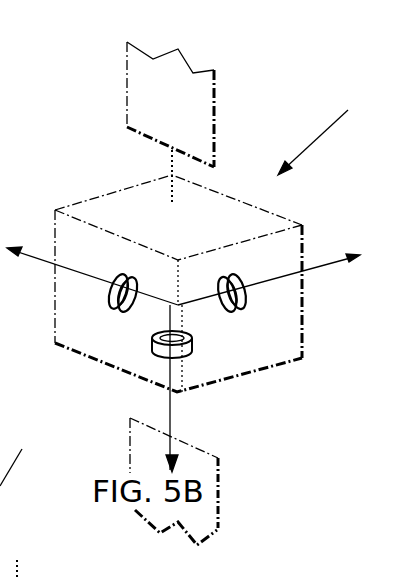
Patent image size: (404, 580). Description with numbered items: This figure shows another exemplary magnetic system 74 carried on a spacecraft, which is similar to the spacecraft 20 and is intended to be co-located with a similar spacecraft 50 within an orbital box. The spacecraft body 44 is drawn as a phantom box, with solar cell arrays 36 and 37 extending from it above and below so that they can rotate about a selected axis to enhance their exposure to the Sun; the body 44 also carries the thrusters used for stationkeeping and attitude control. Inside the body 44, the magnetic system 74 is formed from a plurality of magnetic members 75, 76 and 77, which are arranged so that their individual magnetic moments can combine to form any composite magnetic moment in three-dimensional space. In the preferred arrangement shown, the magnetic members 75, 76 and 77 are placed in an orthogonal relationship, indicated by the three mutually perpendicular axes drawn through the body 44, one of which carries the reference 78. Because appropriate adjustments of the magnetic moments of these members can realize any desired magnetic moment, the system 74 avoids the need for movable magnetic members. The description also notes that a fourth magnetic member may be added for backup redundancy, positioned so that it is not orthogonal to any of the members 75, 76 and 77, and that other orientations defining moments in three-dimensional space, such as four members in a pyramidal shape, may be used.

The solar cell array 36 is at (214, 76).
The solar cell array 37 is at (218, 494).
The spacecraft body 44 is at (306, 333).
The similar spacecraft 50 is at (313, 133).
The magnetic system 74 is at (127, 266).
The magnetic member 75 is at (117, 272).
The magnetic member 76 is at (192, 343).
The magnetic member 77 is at (240, 271).
The horizontal axis arrow 78 is at (40, 259).
The spacecraft 20 is at (18, 456).